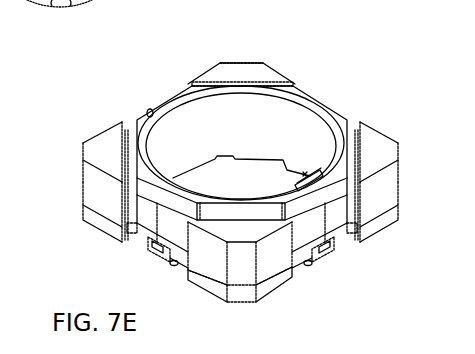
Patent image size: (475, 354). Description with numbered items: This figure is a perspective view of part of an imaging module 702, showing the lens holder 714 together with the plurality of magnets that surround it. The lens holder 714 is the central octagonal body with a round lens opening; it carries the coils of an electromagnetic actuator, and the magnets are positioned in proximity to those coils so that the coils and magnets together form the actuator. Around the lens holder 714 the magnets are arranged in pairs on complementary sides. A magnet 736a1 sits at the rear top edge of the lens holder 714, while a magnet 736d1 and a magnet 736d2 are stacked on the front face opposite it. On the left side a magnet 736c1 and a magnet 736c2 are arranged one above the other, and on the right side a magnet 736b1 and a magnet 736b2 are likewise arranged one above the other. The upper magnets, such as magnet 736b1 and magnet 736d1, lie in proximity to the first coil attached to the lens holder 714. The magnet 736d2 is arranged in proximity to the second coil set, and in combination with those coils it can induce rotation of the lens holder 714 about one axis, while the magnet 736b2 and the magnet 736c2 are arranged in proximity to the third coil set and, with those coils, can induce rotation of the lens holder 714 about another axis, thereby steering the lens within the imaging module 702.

The imaging module 702 is at (343, 14).
The lens holder 714 is at (147, 117).
The magnet 736a1 is at (265, 80).
The magnet 736b1 is at (375, 137).
The magnet 736b2 is at (377, 228).
The magnet 736c1 is at (100, 140).
The magnet 736c2 is at (100, 227).
The magnet 736d1 is at (265, 265).
The magnet 736d2 is at (270, 292).